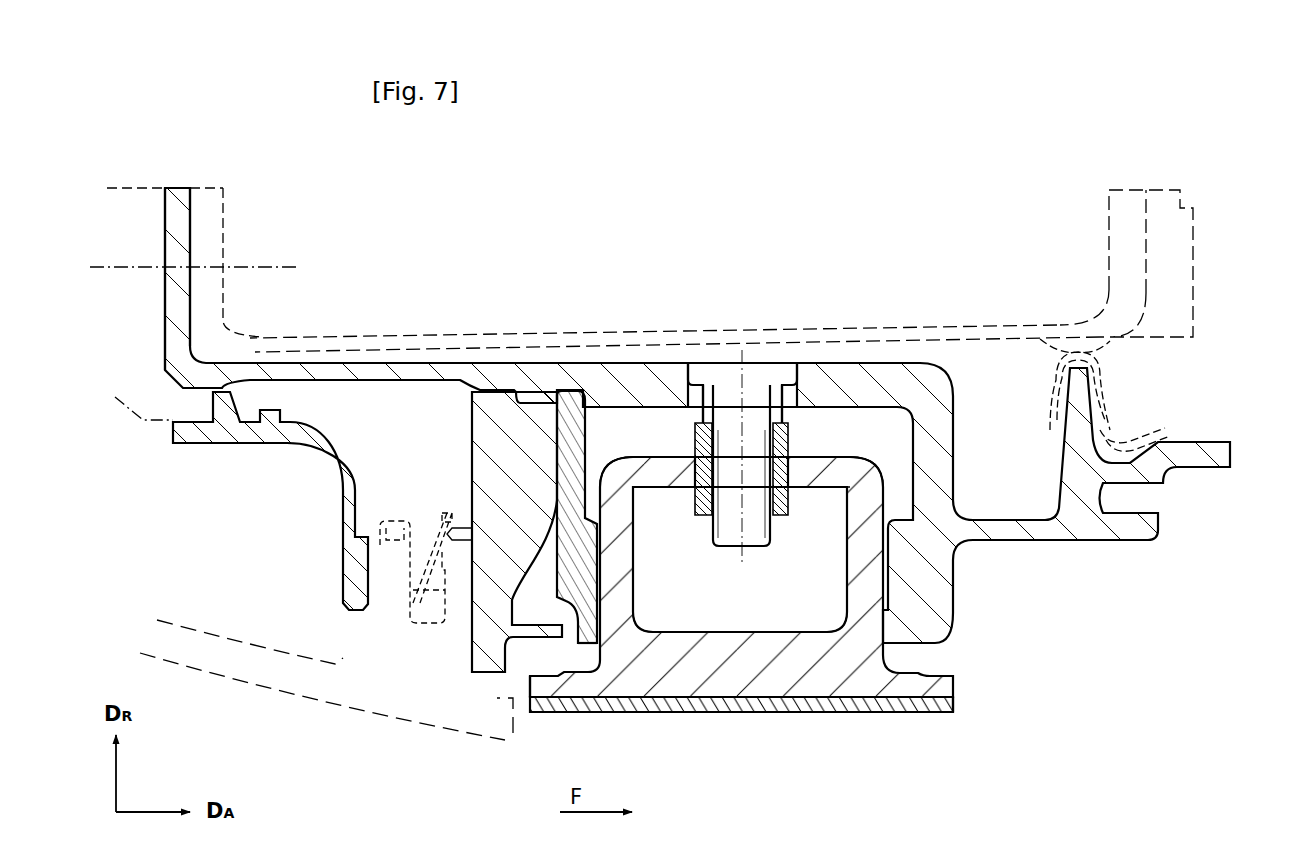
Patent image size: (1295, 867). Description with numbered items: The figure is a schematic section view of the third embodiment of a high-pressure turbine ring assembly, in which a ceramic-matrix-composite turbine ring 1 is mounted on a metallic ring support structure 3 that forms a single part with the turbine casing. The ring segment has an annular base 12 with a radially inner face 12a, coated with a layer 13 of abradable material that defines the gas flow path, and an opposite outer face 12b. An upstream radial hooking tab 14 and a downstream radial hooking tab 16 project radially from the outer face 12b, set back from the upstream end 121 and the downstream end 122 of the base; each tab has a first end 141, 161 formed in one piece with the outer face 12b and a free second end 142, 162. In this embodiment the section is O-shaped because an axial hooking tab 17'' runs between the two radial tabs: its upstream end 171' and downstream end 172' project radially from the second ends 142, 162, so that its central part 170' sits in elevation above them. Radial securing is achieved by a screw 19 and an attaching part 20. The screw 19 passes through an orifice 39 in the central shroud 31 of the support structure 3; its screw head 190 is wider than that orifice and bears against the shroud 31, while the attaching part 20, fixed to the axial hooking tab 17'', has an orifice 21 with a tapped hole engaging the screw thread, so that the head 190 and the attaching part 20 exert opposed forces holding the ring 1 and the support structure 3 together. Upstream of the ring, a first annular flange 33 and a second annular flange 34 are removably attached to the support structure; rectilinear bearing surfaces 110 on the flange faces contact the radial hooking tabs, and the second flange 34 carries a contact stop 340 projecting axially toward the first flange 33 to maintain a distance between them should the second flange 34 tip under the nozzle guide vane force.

The turbine ring 1 is at (870, 212).
The ring support structure 3 is at (200, 222).
The central shroud 31 is at (368, 360).
The orifice 39 is at (690, 360).
The screw head 190 is at (770, 368).
The orifice 21 is at (705, 412).
The contact stop 340 is at (500, 418).
The second end 142 is at (604, 476).
The central part 170' is at (650, 460).
The screw 19 is at (768, 434).
The axial hooking tab 17'' is at (741, 454).
The second end 162 is at (882, 470).
The upstream end 171' is at (663, 505).
The downstream end 172' is at (825, 508).
The upstream radial hooking tab 14 is at (622, 578).
The attaching part 20 is at (780, 518).
The downstream radial hooking tab 16 is at (858, 553).
The outer face 12b is at (742, 630).
The first end 141 is at (652, 624).
The first end 161 is at (838, 625).
The first annular flange 33 is at (580, 585).
The rectilinear bearing surfaces 110 is at (930, 636).
The second annular flange 34 is at (470, 593).
The upstream end 121 is at (528, 688).
The layer of abradable material 13 is at (604, 713).
The annular base 12 is at (720, 713).
The inner face 12a is at (812, 693).
The downstream end 122 is at (960, 688).